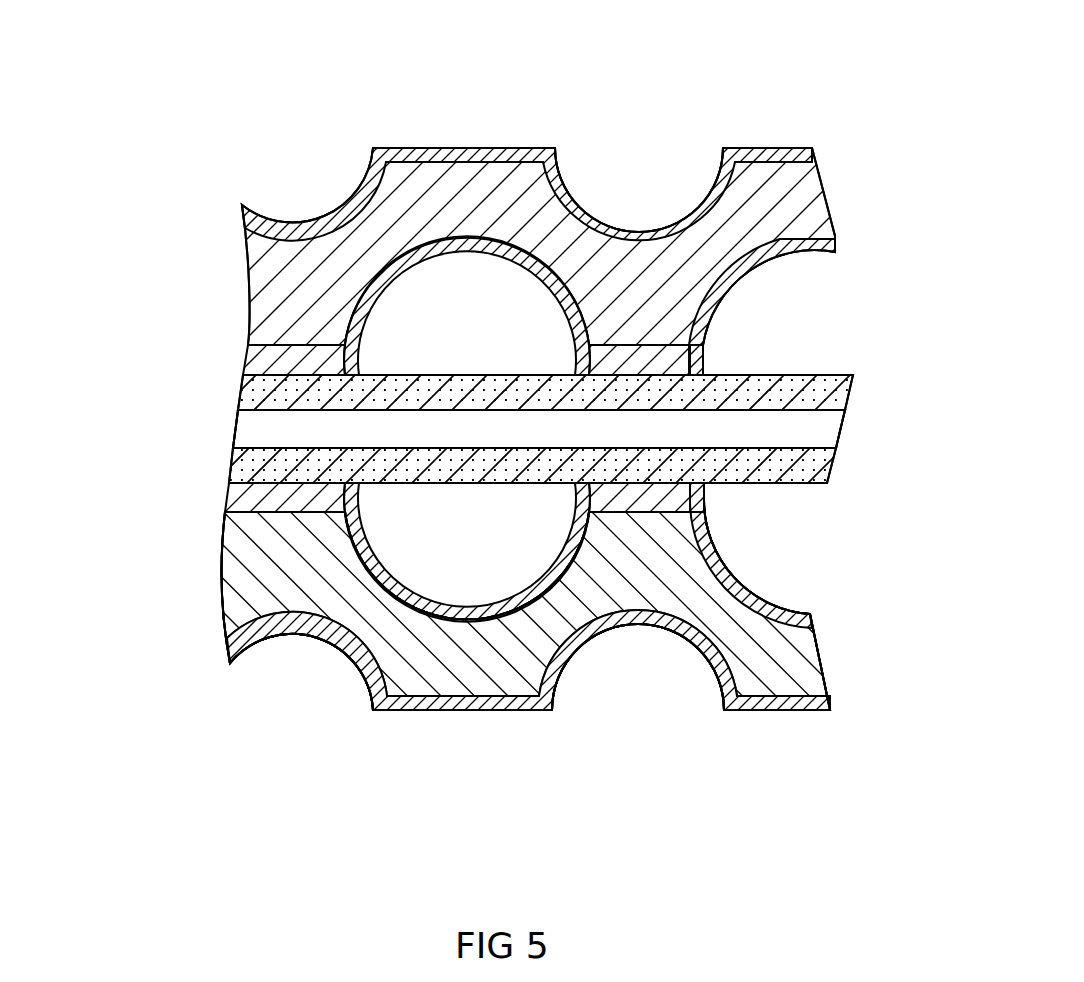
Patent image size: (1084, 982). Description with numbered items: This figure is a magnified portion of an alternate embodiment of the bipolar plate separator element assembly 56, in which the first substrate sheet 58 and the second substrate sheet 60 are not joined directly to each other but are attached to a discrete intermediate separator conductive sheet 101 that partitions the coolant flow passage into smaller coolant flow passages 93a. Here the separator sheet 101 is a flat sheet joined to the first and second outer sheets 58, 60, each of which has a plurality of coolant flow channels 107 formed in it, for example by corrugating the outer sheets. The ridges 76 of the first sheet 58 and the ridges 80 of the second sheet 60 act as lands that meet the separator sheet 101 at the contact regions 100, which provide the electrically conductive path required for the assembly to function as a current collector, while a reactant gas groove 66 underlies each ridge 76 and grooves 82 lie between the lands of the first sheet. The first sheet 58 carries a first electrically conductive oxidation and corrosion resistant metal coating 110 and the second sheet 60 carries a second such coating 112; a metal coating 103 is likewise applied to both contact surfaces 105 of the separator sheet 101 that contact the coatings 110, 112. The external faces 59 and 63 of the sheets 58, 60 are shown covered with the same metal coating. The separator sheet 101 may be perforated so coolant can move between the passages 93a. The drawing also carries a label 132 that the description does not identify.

The bipolar plate separator element assembly 56 is at (187, 117).
The first substrate sheet 58 is at (806, 195).
The external face 59 is at (467, 128).
The second substrate sheet 60 is at (800, 658).
The working surface 63 is at (447, 728).
The reactant gas groove 66 is at (643, 170).
The ridges 76 is at (668, 322).
The ridges 80 is at (668, 550).
The grooves 82 is at (377, 520).
The smaller coolant flow passages 93a is at (397, 323).
The contact regions 100 is at (576, 428).
The intermediate separator conductive sheet 101 is at (822, 433).
The metal coating 103 is at (245, 388).
The contact surfaces 105 is at (763, 395).
The coolant flow channels 107 is at (760, 560).
The first metal coating 110 is at (248, 355).
The second metal coating 112 is at (230, 492).
The lower left notch 132 is at (416, 672).